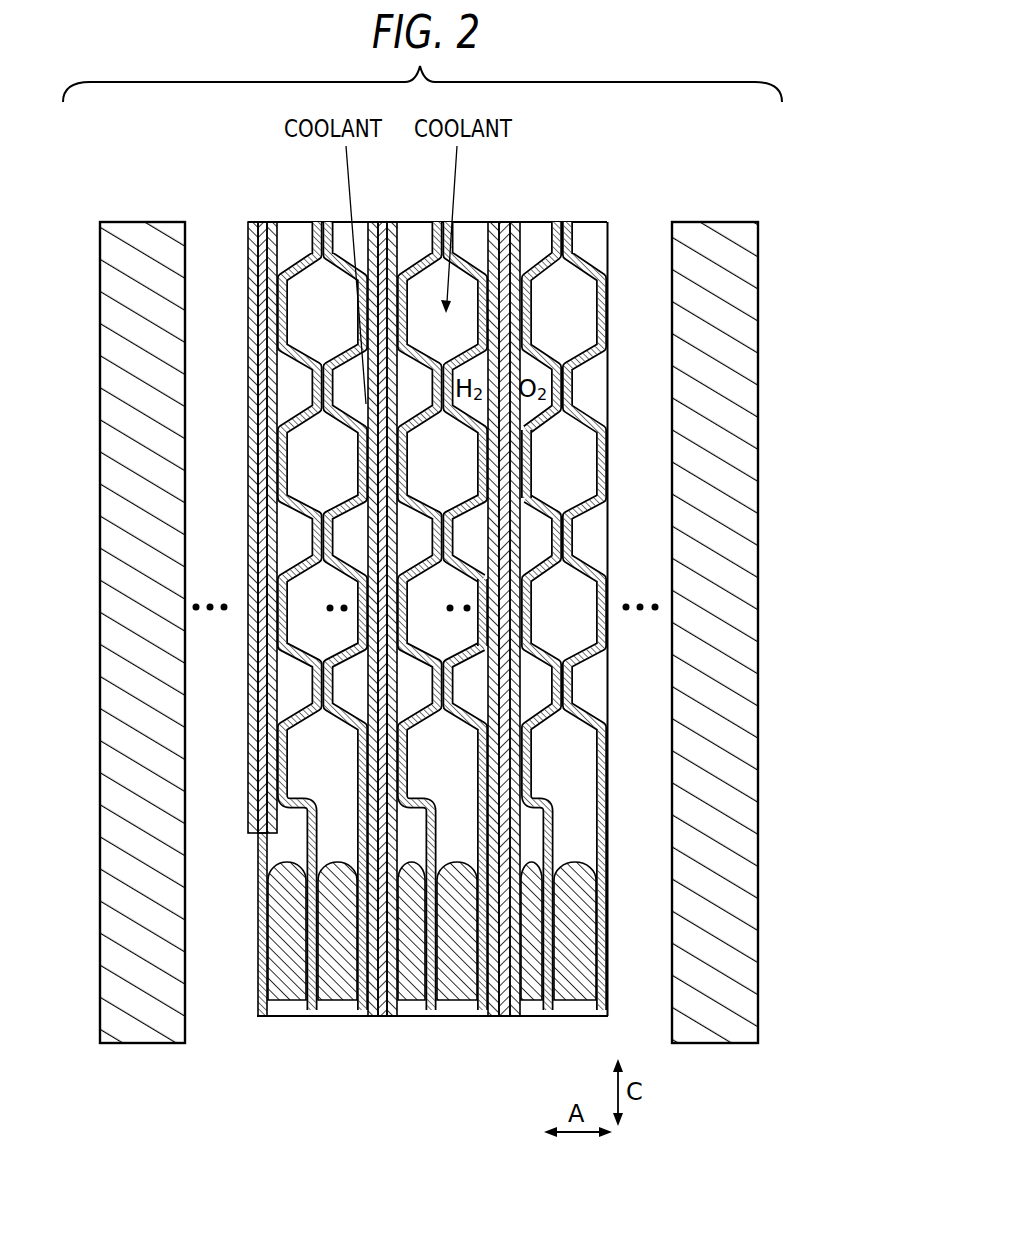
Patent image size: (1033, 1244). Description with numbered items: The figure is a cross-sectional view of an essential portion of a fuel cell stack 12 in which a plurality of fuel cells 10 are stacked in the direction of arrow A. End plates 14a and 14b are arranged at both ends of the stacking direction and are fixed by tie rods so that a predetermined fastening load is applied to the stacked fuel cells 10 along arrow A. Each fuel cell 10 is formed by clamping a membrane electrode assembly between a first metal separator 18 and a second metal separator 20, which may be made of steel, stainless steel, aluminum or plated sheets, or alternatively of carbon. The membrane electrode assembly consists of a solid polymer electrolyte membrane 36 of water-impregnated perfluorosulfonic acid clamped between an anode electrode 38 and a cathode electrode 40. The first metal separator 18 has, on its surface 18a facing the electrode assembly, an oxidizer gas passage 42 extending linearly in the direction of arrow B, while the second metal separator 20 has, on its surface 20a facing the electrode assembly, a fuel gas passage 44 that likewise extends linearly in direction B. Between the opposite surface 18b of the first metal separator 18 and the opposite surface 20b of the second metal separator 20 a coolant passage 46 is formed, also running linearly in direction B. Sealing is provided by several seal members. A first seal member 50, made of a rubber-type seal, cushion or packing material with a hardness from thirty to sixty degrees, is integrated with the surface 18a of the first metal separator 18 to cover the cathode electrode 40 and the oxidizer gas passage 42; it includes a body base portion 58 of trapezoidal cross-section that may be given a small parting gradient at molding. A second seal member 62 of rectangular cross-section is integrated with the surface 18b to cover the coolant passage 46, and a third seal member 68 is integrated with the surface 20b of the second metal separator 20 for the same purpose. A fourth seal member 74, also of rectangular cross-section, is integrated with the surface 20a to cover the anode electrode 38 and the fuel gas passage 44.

The fuel cell stack 12 is at (233, 176).
The fuel cell 10 is at (268, 211).
The end plate 14a is at (726, 1031).
The end plate 14b is at (143, 1031).
The first metal separator 18 is at (554, 616).
The surface of the first metal separator 18a is at (517, 472).
The surface of the first metal separator 18b is at (518, 447).
The second metal separator 20 is at (447, 616).
The surface of the second metal separator 20a is at (491, 623).
The surface of the second metal separator 20b is at (480, 601).
The solid polymer electrolyte membrane 36 is at (504, 222).
The anode electrode 38 is at (497, 222).
The cathode electrode 40 is at (514, 222).
The oxidizer gas passage 42 is at (540, 536).
The fuel gas passage 44 is at (466, 541).
The coolant passage 46 is at (585, 316).
The first seal member 50 is at (514, 1020).
The body base portion 58 is at (336, 1016).
The second seal member 62 is at (577, 1018).
The third seal member 68 is at (461, 1018).
The fourth seal member 74 is at (378, 1018).